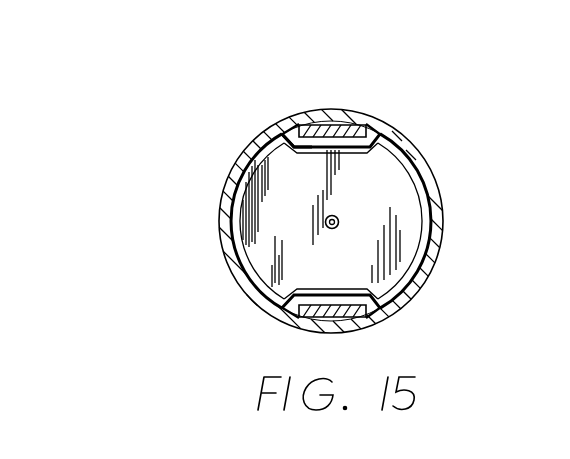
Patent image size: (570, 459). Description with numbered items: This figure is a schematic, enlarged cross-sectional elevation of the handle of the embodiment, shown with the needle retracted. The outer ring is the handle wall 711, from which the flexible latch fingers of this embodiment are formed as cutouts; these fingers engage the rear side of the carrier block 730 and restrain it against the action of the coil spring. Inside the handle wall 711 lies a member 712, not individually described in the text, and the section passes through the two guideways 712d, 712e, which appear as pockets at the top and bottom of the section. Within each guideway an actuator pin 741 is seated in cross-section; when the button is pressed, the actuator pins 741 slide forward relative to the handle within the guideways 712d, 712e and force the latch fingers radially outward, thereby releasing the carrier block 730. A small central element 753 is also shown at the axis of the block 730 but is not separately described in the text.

The handle wall 711 is at (437, 175).
The liner 712 is at (262, 268).
The guideway 712d is at (311, 148).
The guideway 712e is at (345, 128).
The actuator pin 741 is at (315, 128).
The pin 753 is at (339, 222).
The carrier block 730 is at (321, 218).